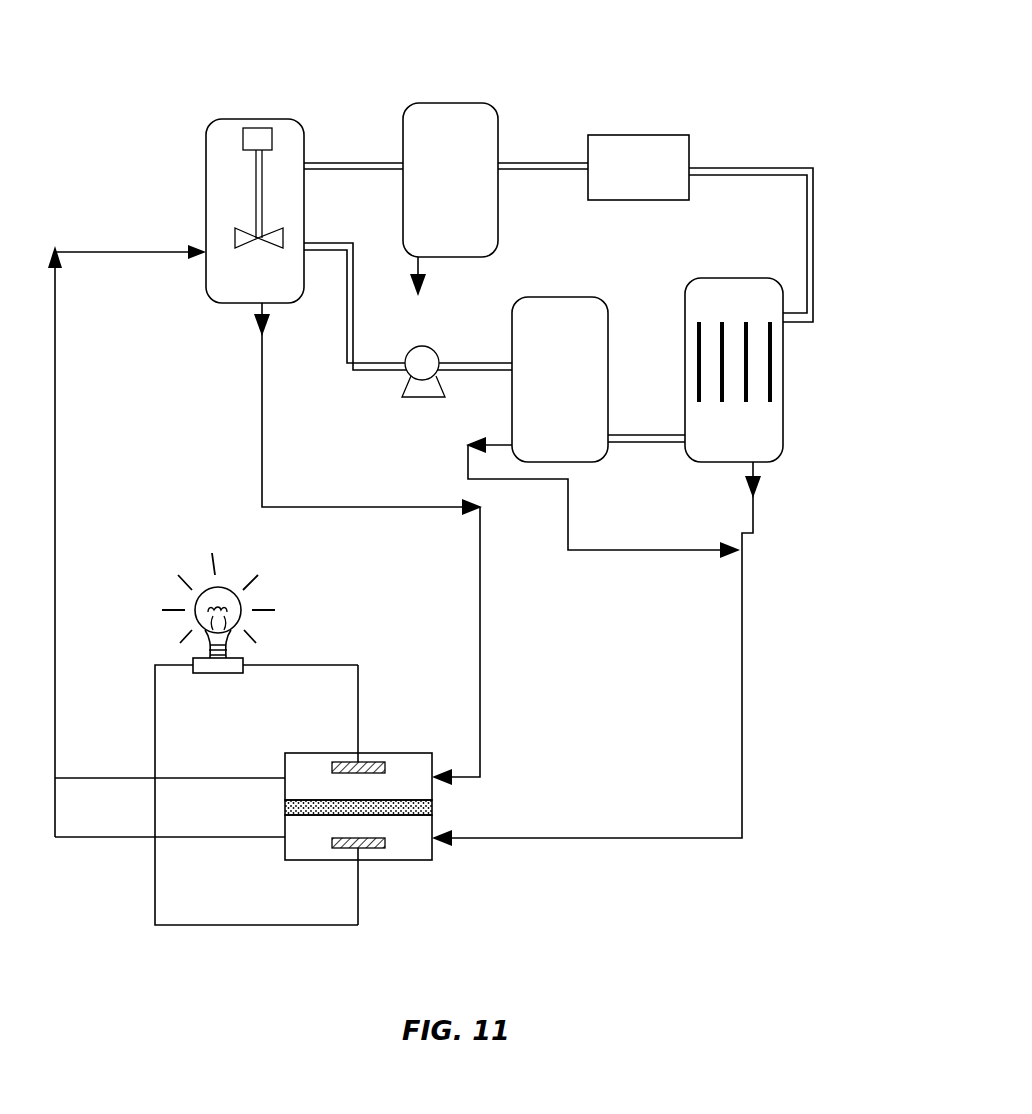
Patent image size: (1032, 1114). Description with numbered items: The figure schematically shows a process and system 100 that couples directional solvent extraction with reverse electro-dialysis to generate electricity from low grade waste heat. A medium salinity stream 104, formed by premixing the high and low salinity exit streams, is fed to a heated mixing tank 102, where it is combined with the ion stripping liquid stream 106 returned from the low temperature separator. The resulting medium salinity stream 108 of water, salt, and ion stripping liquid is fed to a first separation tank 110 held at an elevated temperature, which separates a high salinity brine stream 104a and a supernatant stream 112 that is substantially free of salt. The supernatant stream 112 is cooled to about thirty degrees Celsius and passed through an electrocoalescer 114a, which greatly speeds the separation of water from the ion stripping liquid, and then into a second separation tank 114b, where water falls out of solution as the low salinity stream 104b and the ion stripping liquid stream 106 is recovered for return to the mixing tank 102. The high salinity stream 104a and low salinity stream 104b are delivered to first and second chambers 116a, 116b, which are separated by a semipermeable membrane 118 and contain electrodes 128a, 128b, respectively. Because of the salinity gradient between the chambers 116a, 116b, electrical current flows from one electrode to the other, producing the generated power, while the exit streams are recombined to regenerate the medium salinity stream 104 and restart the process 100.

The process and system 100 is at (845, 97).
The mixing tank 102 is at (304, 132).
The medium salinity stream 104 is at (55, 447).
The high salinity stream 104a is at (262, 404).
The low salinity stream 104b is at (527, 483).
The ion stripping liquid stream 106 is at (347, 347).
The medium salinity stream 108 is at (372, 160).
The first separation tank 110 is at (470, 103).
The supernatant stream 112 is at (546, 160).
The electrocoalescer 114a is at (783, 345).
The second separation tank 114b is at (608, 347).
The first chamber 116a is at (428, 757).
The second chamber 116b is at (430, 848).
The semipermeable membrane 118 is at (432, 808).
The electrode 128a is at (332, 767).
The electrode 128b is at (332, 843).